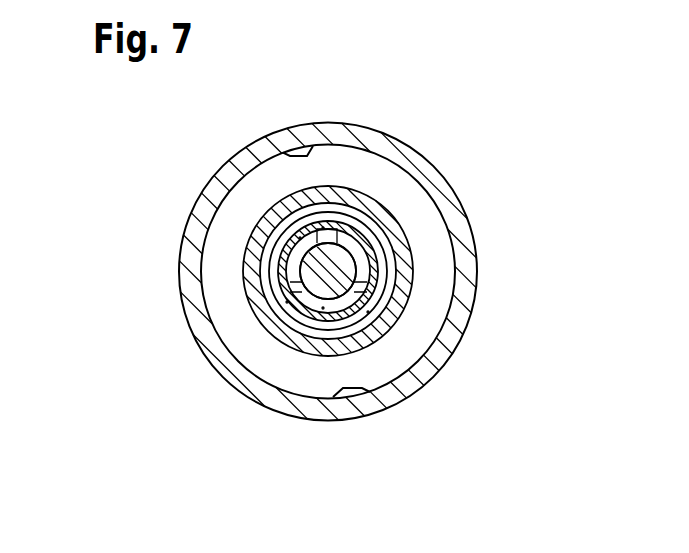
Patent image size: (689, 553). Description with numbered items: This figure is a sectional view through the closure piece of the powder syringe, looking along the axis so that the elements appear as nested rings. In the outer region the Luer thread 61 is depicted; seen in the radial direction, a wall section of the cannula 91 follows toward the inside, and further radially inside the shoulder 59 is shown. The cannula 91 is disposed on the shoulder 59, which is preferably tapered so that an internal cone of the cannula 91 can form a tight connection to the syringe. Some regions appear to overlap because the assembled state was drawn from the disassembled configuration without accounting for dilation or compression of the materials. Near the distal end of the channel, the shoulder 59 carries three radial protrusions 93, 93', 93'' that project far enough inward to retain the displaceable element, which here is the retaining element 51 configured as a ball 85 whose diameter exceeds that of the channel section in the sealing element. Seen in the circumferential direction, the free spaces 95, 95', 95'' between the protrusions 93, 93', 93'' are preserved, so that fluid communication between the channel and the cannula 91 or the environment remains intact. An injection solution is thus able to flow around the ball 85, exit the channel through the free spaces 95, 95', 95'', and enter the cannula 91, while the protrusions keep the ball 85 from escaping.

The Luer thread 61 is at (472, 237).
The cannula 91 is at (405, 282).
The radial protrusion 93 is at (389, 318).
The radial protrusion 93' is at (331, 138).
The radial protrusion 93'' is at (208, 350).
The free space 95 is at (380, 206).
The free space 95' is at (216, 188).
The free space 95'' is at (333, 401).
The ball 85 is at (270, 272).
The retaining element 51 is at (328, 271).
The shoulder 59 is at (368, 312).